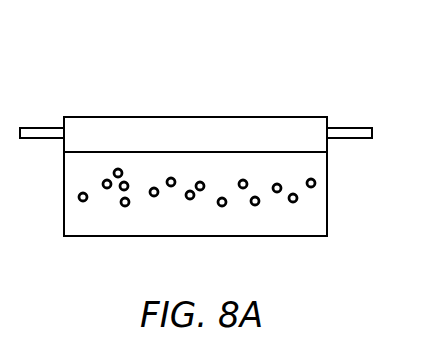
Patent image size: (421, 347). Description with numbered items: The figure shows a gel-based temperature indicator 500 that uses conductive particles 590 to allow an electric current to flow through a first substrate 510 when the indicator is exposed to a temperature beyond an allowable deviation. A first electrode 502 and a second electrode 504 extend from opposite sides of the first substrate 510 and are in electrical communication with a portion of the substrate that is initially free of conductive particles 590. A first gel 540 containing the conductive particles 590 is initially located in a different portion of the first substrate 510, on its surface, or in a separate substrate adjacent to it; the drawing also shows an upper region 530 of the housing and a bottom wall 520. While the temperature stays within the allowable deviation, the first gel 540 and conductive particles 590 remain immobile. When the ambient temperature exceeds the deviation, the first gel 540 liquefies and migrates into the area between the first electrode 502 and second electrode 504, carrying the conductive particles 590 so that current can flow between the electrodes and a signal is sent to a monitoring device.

The gel-based temperature indicator 500 is at (145, 70).
The first electrode 502 is at (352, 128).
The second electrode 504 is at (43, 128).
The first substrate 510 is at (327, 208).
The bottom wall 520 is at (165, 237).
The upper compartment 530 is at (223, 117).
The first gel 540 is at (272, 218).
The conductive particles 590 is at (80, 203).